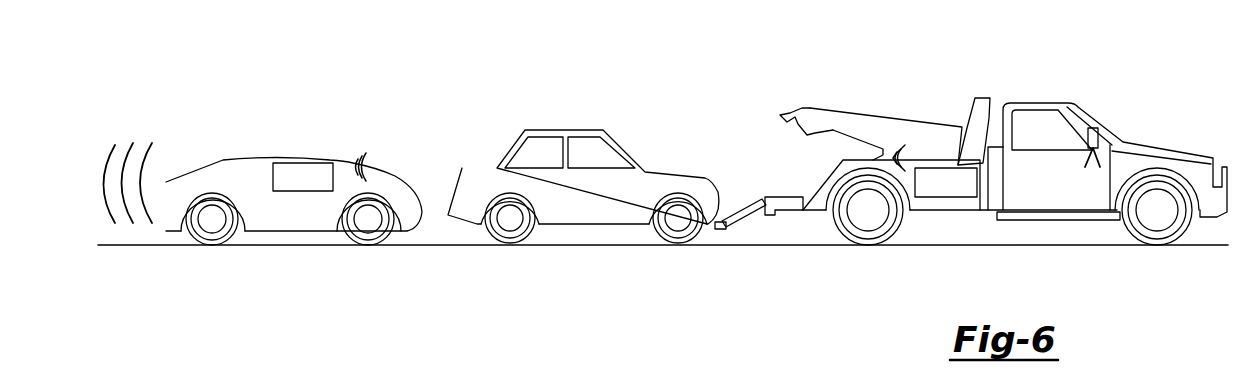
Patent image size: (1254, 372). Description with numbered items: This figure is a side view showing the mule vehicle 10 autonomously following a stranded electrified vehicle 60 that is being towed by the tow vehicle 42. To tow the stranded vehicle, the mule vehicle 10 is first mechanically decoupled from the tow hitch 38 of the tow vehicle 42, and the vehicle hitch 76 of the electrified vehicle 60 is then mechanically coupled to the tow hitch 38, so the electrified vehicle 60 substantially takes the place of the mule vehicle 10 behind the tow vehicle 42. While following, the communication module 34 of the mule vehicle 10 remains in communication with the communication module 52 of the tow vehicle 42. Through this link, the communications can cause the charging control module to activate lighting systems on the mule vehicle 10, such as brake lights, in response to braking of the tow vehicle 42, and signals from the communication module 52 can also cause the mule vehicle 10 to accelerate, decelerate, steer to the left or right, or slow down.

The mule vehicle 10 is at (346, 142).
The communication module 34 is at (303, 163).
The electrified vehicle 60 is at (650, 146).
The vehicle hitch 76 is at (717, 230).
The tow hitch 38 is at (744, 219).
The tow vehicle 42 is at (1156, 120).
The communication module 52 is at (947, 168).